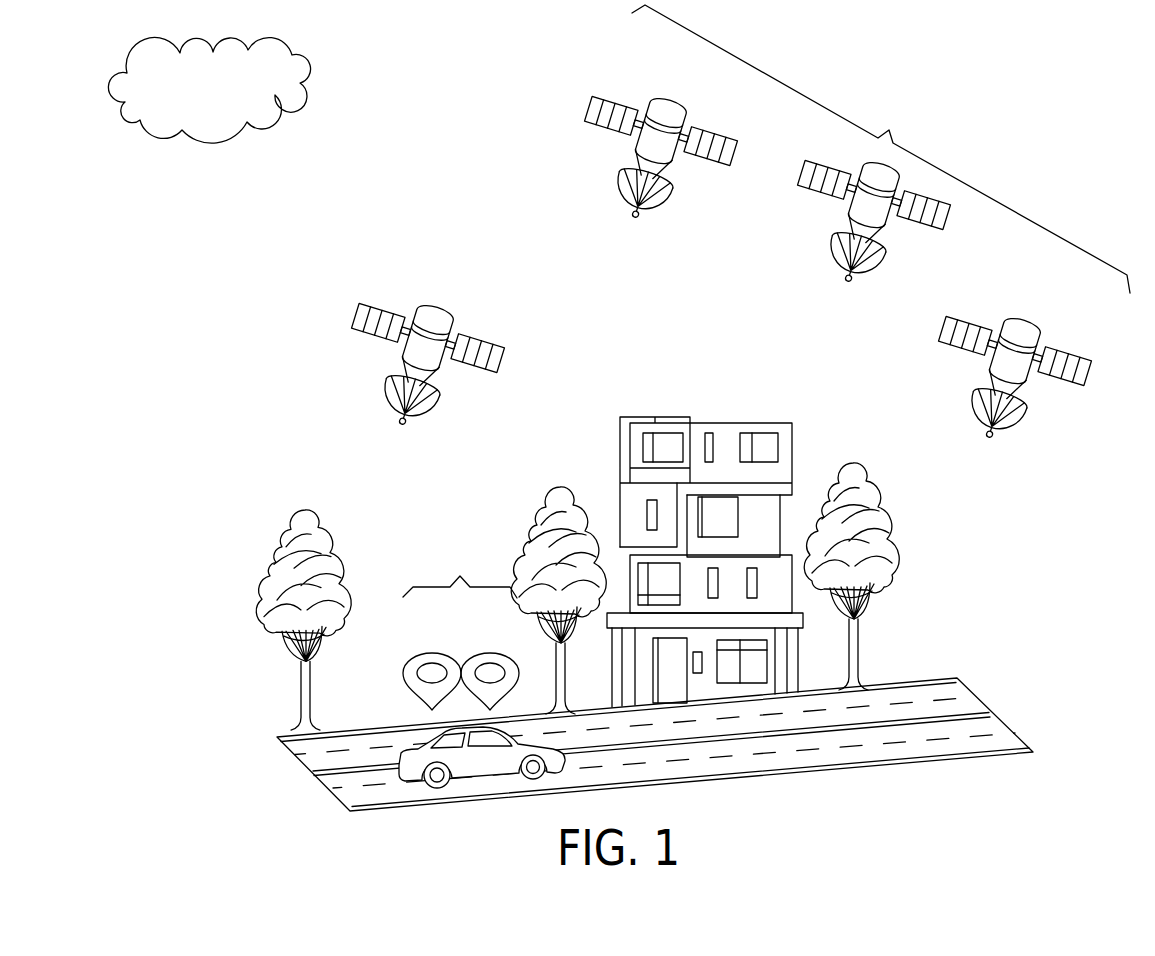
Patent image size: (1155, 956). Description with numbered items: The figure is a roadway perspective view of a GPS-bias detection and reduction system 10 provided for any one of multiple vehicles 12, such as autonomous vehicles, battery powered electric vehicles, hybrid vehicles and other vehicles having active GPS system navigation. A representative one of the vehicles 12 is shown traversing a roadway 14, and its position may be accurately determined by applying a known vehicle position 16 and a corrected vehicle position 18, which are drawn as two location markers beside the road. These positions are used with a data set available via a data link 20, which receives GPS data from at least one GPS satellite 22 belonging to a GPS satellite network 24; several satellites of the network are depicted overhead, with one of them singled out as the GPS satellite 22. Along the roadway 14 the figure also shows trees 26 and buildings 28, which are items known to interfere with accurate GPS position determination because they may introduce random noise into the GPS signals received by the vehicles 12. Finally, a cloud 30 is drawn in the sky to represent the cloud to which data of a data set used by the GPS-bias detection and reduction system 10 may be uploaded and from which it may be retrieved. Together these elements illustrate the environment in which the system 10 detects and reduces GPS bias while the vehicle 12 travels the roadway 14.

The GPS-bias detection and reduction system 10 is at (1043, 65).
The vehicle 12 is at (477, 760).
The roadway 14 is at (745, 758).
The known vehicle position 16 is at (425, 653).
The corrected vehicle position 18 is at (490, 653).
The data link 20 is at (443, 628).
The GPS satellite 22 is at (438, 305).
The GPS satellite network 24 is at (846, 232).
The tree 26 is at (282, 562).
The building 28 is at (793, 443).
The cloud 30 is at (313, 85).